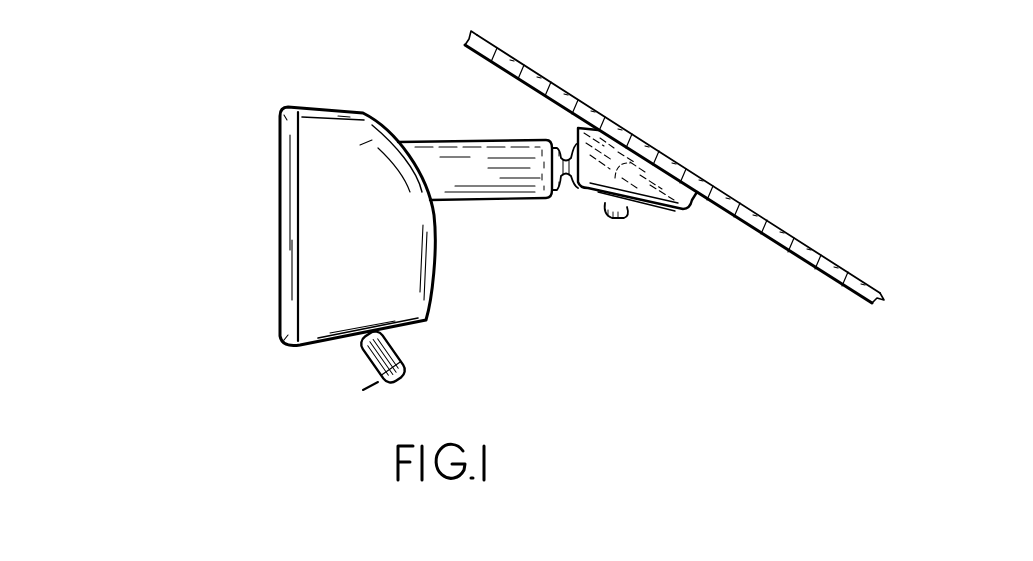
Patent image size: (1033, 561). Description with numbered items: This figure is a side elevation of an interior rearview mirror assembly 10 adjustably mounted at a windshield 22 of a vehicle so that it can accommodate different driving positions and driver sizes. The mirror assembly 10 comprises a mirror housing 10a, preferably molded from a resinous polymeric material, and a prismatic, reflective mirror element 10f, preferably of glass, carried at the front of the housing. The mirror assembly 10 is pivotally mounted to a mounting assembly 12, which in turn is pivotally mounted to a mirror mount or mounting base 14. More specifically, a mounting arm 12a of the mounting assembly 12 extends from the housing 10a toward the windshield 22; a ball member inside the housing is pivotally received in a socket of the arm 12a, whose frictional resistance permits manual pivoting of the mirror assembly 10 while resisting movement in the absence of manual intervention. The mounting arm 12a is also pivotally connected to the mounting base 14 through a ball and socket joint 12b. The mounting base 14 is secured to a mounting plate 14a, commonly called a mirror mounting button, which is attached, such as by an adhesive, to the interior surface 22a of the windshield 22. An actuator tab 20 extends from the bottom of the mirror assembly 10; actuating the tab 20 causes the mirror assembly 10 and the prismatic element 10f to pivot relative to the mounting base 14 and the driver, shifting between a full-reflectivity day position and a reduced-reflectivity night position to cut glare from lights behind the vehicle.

The interior rearview mirror assembly 10 is at (296, 182).
The mirror housing 10a is at (345, 135).
The prismatic reflective mirror element 10f is at (262, 227).
The mounting assembly 12 is at (508, 214).
The mounting arm 12a is at (452, 158).
The ball and socket joint 12b is at (552, 197).
The mounting base 14 is at (648, 186).
The mounting plate (mirror mounting button) 14a is at (621, 160).
The actuator tab 20 is at (400, 376).
The windshield 22 is at (674, 187).
The interior surface of windshield 22a is at (807, 267).